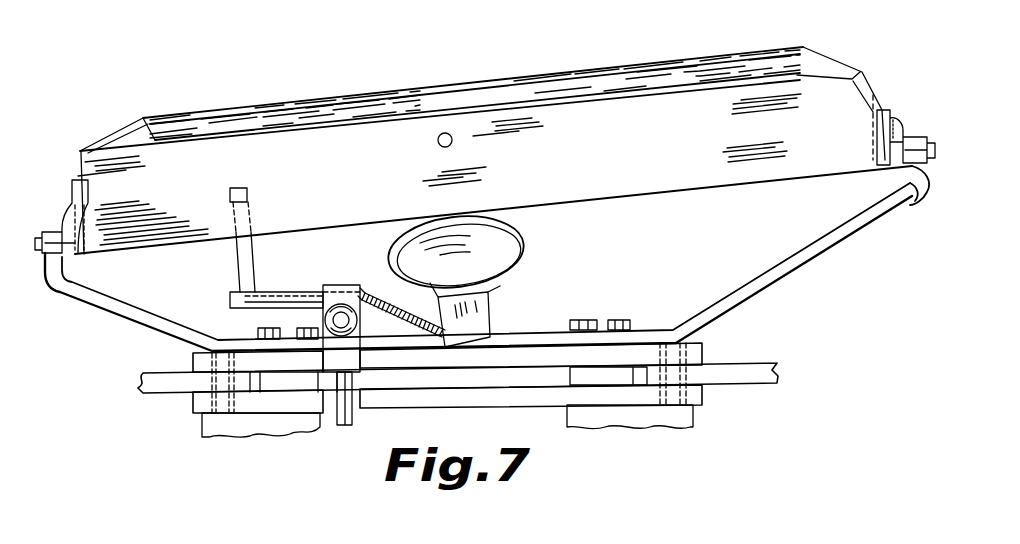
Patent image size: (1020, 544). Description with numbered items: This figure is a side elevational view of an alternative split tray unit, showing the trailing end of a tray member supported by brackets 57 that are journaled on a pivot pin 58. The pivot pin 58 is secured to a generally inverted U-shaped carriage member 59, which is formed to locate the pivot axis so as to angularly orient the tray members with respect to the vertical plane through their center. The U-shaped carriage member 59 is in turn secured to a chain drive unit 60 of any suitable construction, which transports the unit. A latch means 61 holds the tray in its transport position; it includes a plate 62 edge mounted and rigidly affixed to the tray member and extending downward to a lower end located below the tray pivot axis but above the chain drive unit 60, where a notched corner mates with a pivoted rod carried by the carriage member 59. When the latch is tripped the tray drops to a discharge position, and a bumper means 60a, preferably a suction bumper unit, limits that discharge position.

The bracket 57 is at (898, 112).
The pivot pin 58 is at (915, 196).
The carriage member 59 is at (768, 268).
The chain drive unit 60 is at (530, 376).
The bumper means 60a is at (535, 233).
The latch means 61 is at (346, 278).
The plate 62 is at (247, 249).